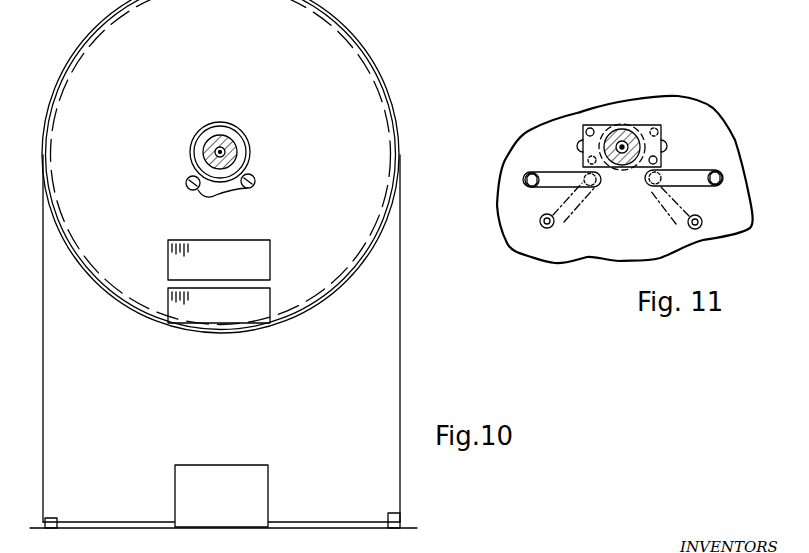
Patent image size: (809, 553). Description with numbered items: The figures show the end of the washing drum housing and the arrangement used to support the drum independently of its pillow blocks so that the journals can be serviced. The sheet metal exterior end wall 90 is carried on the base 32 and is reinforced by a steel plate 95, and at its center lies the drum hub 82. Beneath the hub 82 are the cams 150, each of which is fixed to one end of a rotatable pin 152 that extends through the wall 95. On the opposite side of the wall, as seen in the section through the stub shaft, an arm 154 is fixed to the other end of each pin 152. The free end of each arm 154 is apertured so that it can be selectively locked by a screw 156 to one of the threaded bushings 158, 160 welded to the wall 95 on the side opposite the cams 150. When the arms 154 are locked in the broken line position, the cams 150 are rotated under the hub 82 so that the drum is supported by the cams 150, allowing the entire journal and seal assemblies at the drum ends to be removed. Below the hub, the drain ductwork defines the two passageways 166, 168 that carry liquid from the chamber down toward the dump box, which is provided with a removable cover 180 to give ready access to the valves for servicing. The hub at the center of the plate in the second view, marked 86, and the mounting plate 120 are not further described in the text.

In FIG. 10, the base 32 is at (411, 340).
In FIG. 10, the hub 82 is at (207, 122).
In FIG. 11, the hub 86 is at (623, 129).
In FIG. 10, the exterior end wall 90 is at (380, 91).
In FIG. 11, the steel plate 95 is at (689, 101).
In FIG. 11, the mounting plate 120 is at (597, 125).
In FIG. 10, the cam 150 is at (202, 193).
In FIG. 10, the rotatable pin 152 is at (257, 180).
In FIG. 11, the arm 154 is at (552, 168).
In FIG. 11, the screw 156 is at (526, 175).
In FIG. 11, the threaded bushing 158 is at (543, 228).
In FIG. 11, the threaded bushing 160 is at (524, 187).
In FIG. 10, the passageway 166 is at (219, 260).
In FIG. 10, the passageway 168 is at (219, 305).
In FIG. 10, the removable cover 180 is at (221, 496).